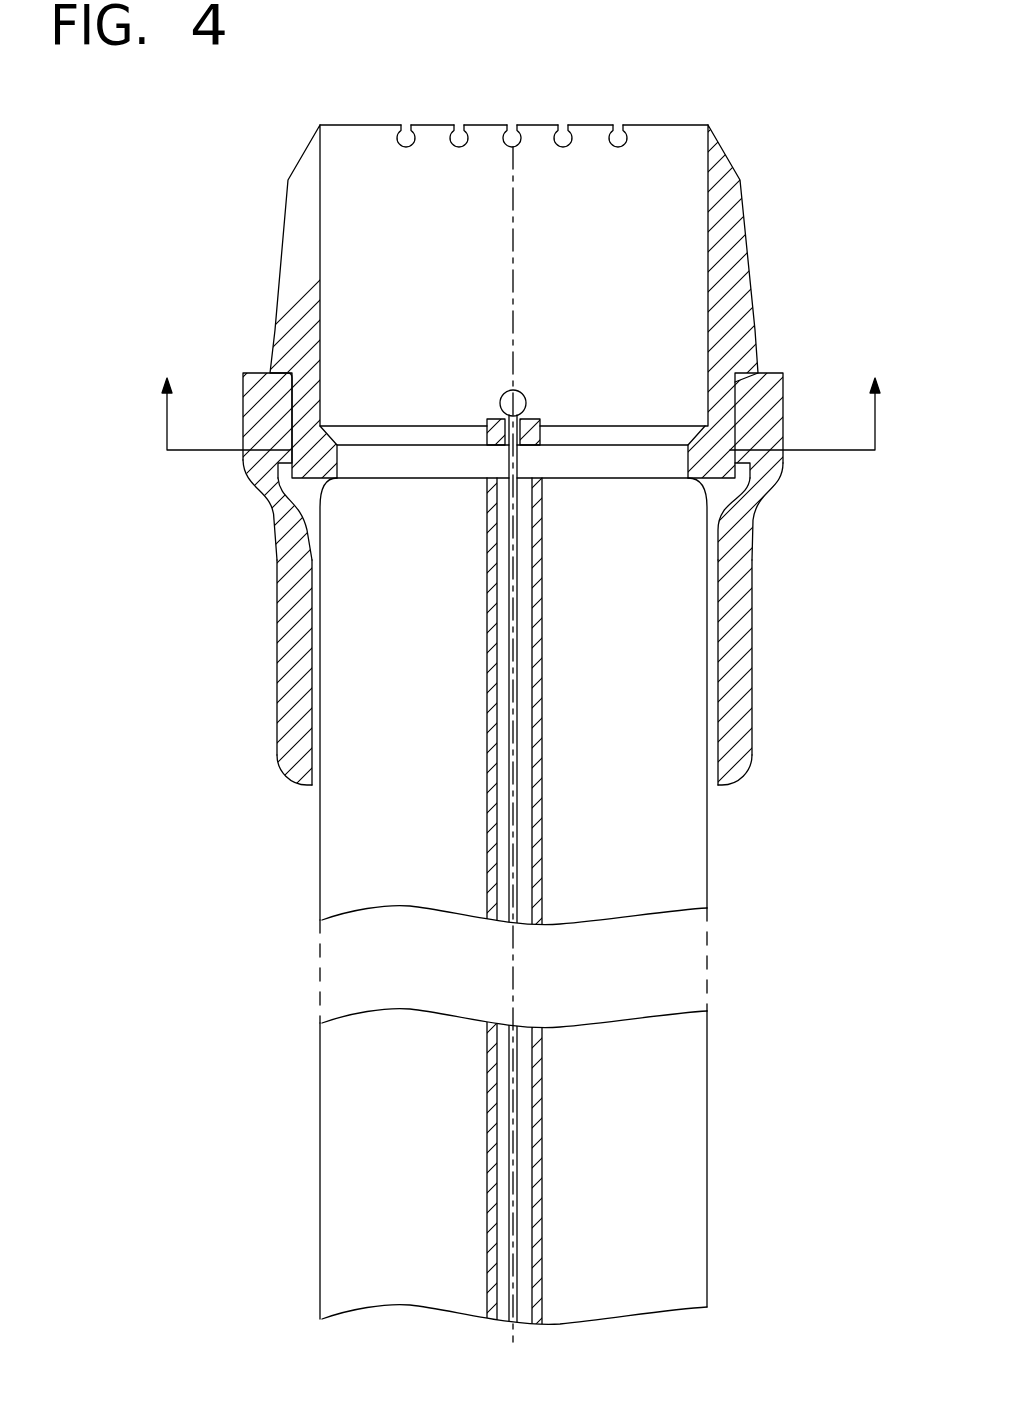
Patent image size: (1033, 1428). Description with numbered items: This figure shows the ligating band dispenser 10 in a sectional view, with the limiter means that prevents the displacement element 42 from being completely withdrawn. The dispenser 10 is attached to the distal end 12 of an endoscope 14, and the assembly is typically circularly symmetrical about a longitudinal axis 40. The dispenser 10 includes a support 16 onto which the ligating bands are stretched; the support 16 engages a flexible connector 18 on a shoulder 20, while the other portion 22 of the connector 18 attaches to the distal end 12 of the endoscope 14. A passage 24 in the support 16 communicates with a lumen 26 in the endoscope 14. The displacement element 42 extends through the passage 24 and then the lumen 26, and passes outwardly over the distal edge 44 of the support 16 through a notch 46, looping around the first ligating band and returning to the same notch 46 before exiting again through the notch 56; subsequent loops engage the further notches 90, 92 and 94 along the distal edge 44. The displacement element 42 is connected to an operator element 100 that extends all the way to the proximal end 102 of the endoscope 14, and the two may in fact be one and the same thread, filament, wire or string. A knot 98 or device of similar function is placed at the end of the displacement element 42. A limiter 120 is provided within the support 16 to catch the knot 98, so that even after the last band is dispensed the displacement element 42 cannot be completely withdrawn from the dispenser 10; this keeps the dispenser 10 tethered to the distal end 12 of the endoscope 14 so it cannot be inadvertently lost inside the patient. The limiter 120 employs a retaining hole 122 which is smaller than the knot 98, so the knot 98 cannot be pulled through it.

The ligating band dispenser 10 is at (806, 901).
The distal end 12 is at (708, 568).
The endoscope 14 is at (708, 1188).
The support 16 is at (754, 300).
The flexible connector 18 is at (781, 483).
The shoulder 20 is at (737, 405).
The other portion 22 is at (733, 783).
The passage 24 is at (598, 170).
The lumen 26 is at (541, 880).
The longitudinal axis 40 is at (512, 255).
The displacement element 42 is at (515, 546).
The distal edge 44 is at (709, 124).
The notch 46 is at (618, 123).
The notch 56 is at (563, 123).
The notch 90 is at (511, 123).
The notch 92 is at (459, 123).
The notch 94 is at (405, 123).
The knot 98 is at (524, 391).
The operator element 100 is at (515, 808).
The proximal end 102 is at (658, 1288).
The limiter 120 is at (488, 421).
The retaining hole 122 is at (540, 420).